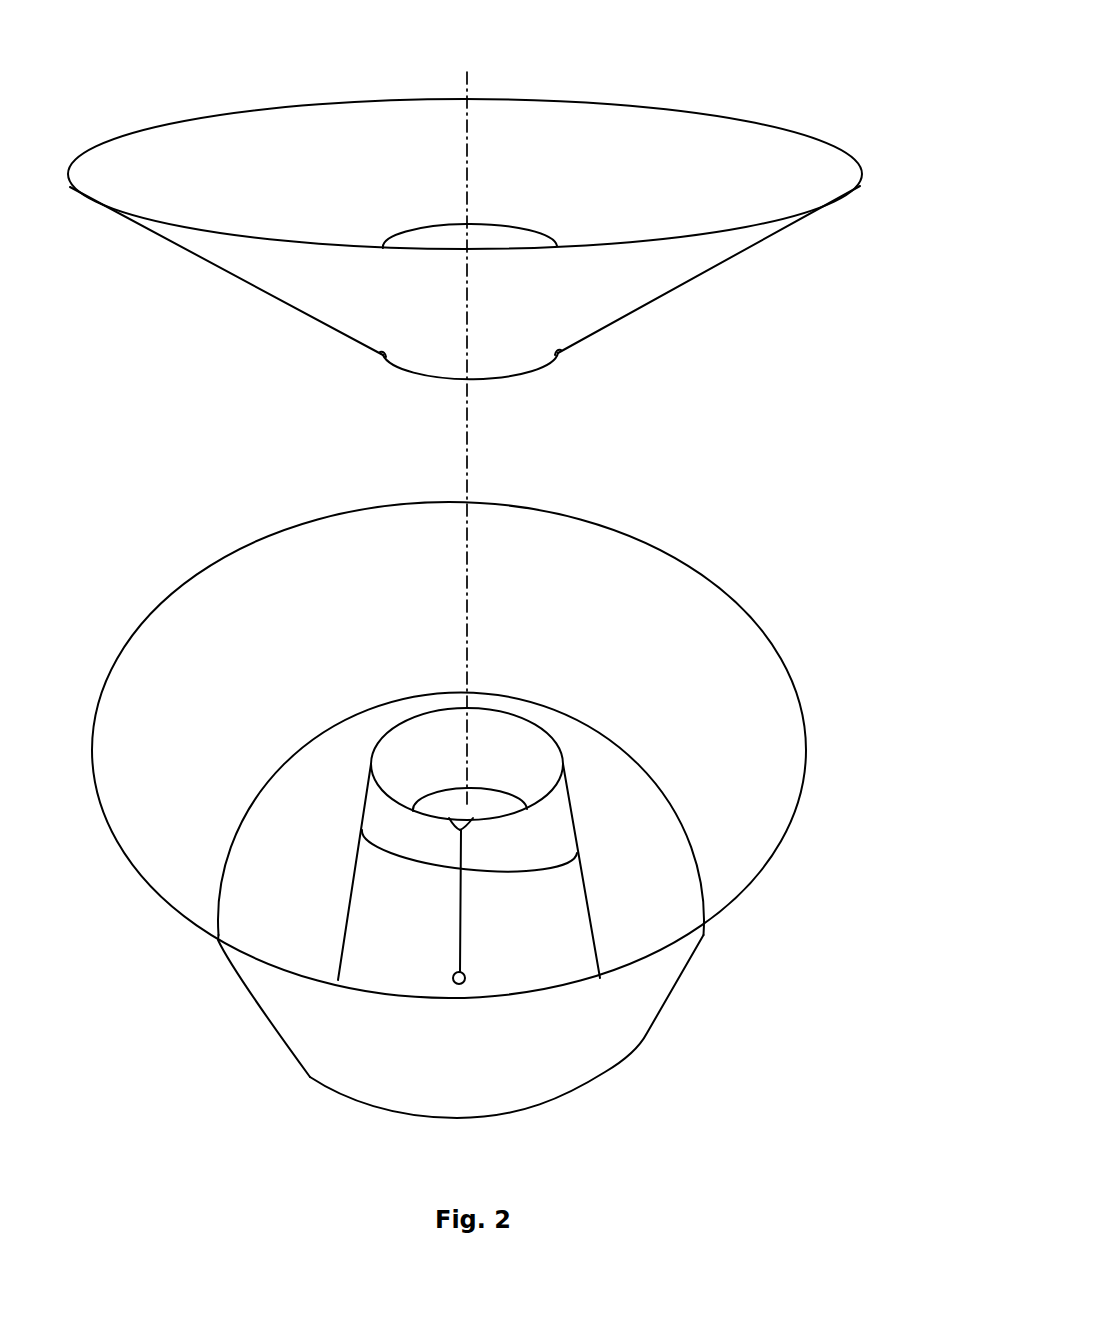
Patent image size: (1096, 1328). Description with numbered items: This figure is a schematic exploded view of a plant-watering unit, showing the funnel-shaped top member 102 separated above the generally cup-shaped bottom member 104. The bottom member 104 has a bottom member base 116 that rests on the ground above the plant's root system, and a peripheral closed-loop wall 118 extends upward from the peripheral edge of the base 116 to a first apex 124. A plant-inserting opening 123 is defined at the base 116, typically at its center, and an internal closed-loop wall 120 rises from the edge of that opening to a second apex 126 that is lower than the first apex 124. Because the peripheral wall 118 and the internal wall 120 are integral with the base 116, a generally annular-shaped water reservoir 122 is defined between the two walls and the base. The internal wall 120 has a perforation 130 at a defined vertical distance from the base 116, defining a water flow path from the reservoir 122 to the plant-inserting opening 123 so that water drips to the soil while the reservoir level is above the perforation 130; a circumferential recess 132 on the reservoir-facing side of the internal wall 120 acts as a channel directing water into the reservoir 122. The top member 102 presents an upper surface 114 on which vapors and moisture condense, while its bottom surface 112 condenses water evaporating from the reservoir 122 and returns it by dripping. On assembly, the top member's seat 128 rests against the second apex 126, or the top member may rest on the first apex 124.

The top member 102 is at (491, 229).
The bottom member 104 is at (477, 790).
The bottom surface 112 is at (620, 295).
The surface 114 is at (793, 193).
The bottom member base 116 is at (652, 910).
The peripheral closed-loop wall 118 is at (757, 823).
The internal closed-loop wall 120 is at (421, 785).
The water reservoir 122 is at (158, 745).
The plant-inserting opening 123 is at (447, 806).
The first apex 124 is at (805, 715).
The second apex 126 is at (513, 717).
The seat 128 is at (397, 370).
The perforation 130 is at (466, 981).
The circumferential recess 132 is at (397, 852).